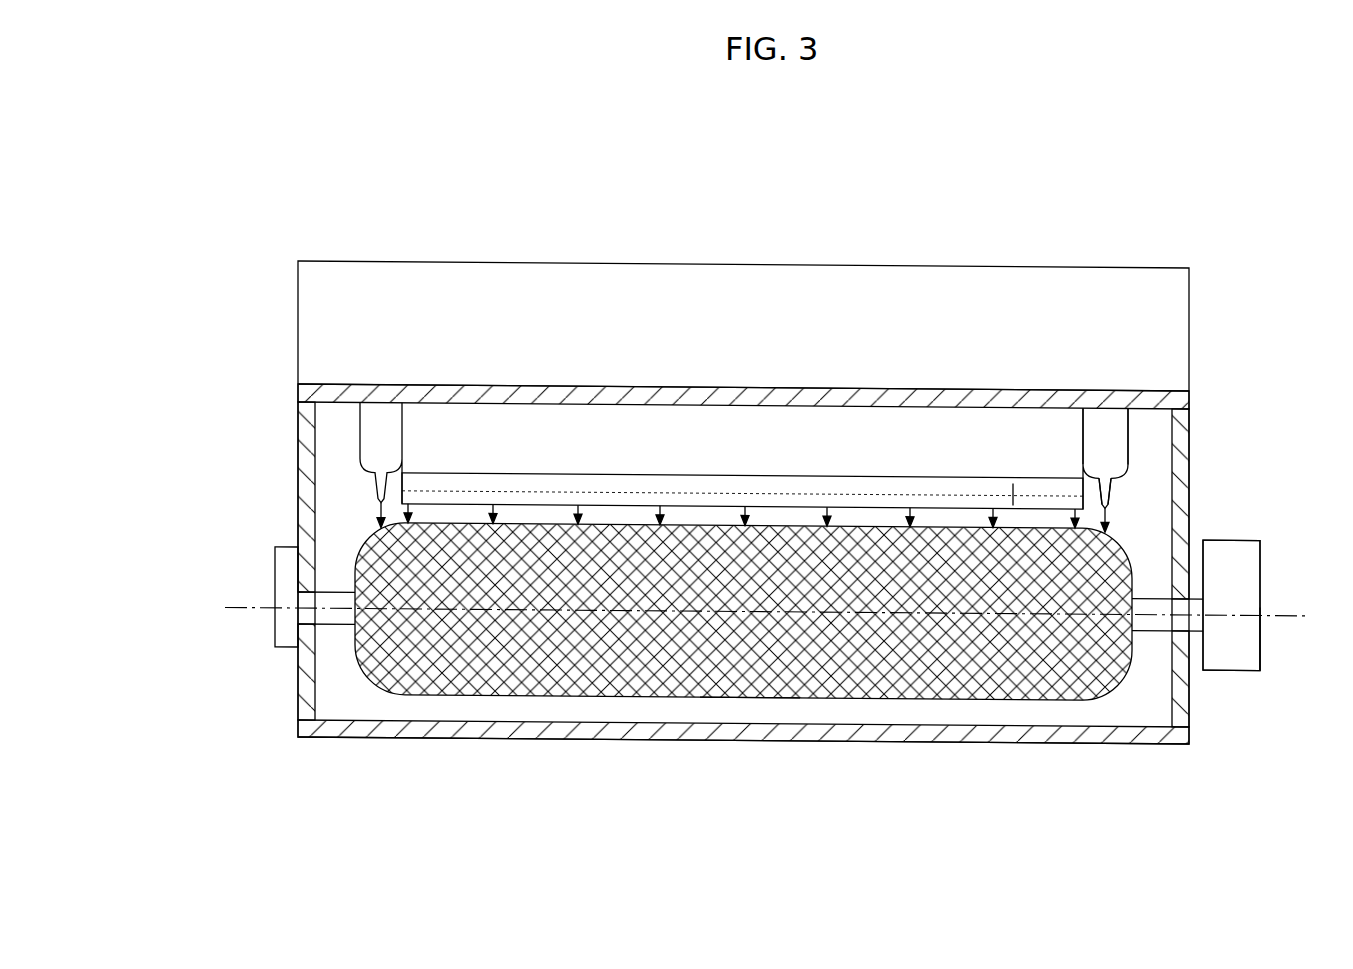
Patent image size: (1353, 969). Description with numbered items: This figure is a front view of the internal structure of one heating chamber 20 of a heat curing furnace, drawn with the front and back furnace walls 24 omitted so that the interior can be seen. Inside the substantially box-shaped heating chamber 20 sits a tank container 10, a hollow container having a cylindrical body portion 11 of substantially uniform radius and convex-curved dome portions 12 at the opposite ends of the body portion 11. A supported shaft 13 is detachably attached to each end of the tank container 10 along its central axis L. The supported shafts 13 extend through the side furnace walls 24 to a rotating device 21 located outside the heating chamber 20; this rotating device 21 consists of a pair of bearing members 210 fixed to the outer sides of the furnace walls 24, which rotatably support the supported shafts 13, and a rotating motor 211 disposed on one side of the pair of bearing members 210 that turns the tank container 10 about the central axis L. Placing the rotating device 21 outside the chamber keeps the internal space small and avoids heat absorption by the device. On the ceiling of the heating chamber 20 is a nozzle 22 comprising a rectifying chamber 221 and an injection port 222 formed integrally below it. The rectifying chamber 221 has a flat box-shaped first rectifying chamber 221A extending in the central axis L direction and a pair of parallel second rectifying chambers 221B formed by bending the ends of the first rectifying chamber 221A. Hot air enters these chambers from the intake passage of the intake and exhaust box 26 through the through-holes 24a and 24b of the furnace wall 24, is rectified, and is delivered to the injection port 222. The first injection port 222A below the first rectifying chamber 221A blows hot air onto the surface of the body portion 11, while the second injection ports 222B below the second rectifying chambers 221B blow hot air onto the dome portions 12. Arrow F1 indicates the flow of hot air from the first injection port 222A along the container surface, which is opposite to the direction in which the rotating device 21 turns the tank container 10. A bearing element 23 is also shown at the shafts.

The tank container 10 is at (935, 697).
The body portion 11 is at (752, 696).
The dome portion 12 is at (361, 668).
The supported shaft 13 is at (343, 626).
The heating chamber 20 is at (1193, 396).
The rotating device 21 is at (1261, 553).
The bearing member 210 is at (278, 560).
The rotating motor 211 is at (1250, 637).
The nozzle 22 is at (356, 430).
The rectifying chamber 221 is at (1284, 406).
The first rectifying chamber 221A is at (1098, 436).
The second rectifying chamber 221B is at (1130, 413).
The injection port 222 is at (1284, 485).
The first injection port 222A is at (1114, 524).
The second injection port 222B is at (1110, 511).
The bearing 23 is at (297, 592).
The furnace wall 24 is at (370, 445).
The through-hole 24a is at (553, 384).
The through-hole 24b is at (376, 384).
The intake and exhaust box 26 is at (297, 322).
The arrow F1 is at (1013, 478).
The central axis L is at (773, 612).